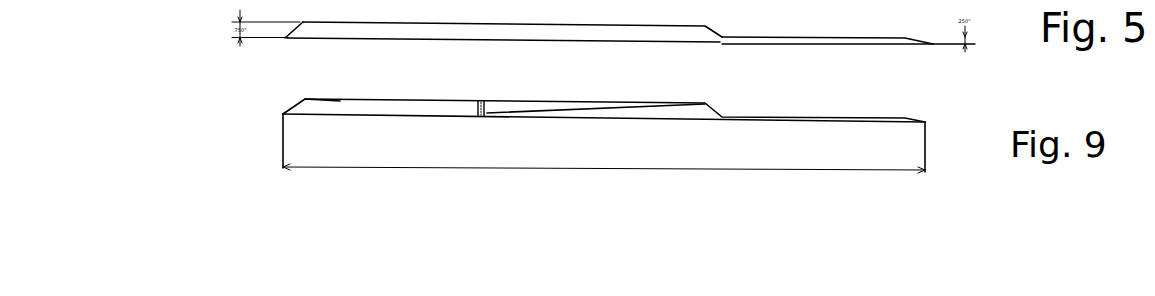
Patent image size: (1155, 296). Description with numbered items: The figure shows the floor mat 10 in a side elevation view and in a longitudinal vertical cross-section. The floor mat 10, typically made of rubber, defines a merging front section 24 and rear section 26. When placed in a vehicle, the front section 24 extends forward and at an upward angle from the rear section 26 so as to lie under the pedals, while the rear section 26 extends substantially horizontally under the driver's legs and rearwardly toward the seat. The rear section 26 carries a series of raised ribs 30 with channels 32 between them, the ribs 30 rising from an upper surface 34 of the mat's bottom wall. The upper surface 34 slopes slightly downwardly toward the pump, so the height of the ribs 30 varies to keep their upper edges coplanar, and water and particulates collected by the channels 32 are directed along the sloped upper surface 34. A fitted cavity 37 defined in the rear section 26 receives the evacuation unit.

In FIG. 5, the floor mat 10 is at (222, 97).
In FIG. 9, the floor mat 10 is at (268, 113).
In FIG. 5, the front section 24 is at (921, 50).
In FIG. 9, the front section 24 is at (927, 112).
In FIG. 5, the rear section 26 is at (718, 42).
In FIG. 9, the rear section 26 is at (285, 223).
In FIG. 9, the raised ribs 30 is at (537, 72).
In FIG. 9, the channels 32 is at (490, 113).
In FIG. 9, the upper surface 34 is at (563, 108).
In FIG. 9, the fitted cavity 37 is at (330, 100).